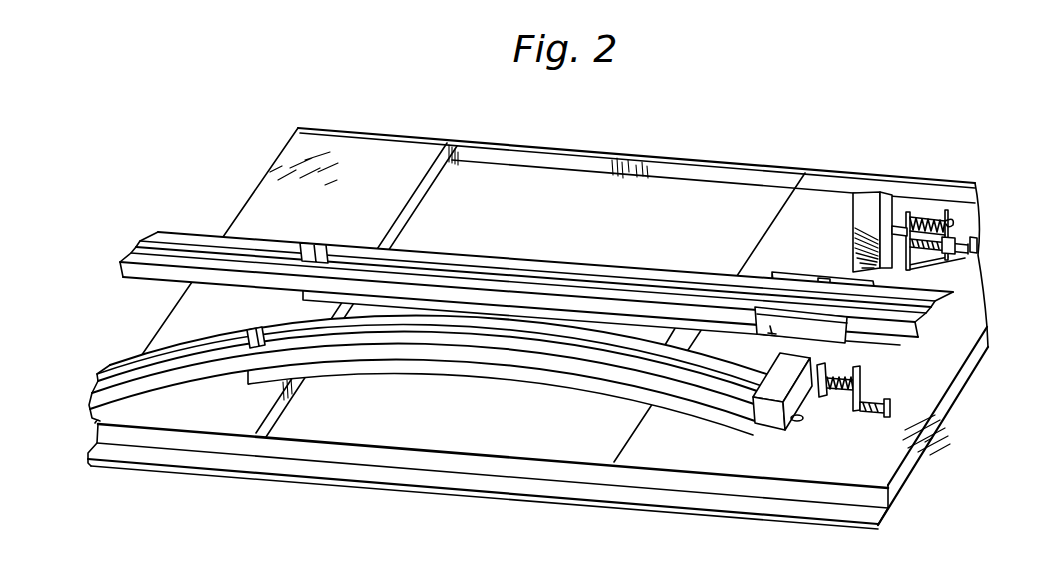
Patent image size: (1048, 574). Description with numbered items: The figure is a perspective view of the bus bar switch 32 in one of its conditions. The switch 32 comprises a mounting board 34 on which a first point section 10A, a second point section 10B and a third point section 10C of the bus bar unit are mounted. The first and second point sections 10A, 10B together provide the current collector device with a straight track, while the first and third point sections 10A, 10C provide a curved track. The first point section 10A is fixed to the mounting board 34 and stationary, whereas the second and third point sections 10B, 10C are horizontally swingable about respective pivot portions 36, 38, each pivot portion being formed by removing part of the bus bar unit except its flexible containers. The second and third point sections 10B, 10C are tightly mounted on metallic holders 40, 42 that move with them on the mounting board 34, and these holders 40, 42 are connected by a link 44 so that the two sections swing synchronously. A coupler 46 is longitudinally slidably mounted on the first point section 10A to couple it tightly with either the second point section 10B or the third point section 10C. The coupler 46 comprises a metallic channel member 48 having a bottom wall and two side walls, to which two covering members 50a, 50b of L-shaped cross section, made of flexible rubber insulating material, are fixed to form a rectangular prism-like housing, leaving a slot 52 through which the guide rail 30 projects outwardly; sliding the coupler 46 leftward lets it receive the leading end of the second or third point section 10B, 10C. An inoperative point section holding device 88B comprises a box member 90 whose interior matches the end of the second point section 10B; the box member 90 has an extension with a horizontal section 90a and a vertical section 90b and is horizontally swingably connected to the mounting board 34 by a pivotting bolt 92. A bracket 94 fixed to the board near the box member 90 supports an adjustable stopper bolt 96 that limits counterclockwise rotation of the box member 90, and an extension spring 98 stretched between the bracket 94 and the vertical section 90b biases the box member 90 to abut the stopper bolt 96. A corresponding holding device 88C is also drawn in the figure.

The first point section 10A is at (918, 345).
The second point section 10B is at (574, 290).
The third point section 10C is at (431, 366).
The guide rail 30 is at (603, 277).
The switch 32 is at (678, 131).
The mounting board 34 is at (401, 143).
The pivot portion 36 is at (328, 240).
The pivot portion 38 is at (258, 324).
The metallic holder 40 is at (330, 297).
The metallic holder 42 is at (500, 381).
The link 44 is at (680, 332).
The coupler 46 is at (801, 262).
The metallic channel member 48 is at (833, 342).
The covering member 50a is at (856, 386).
The covering member 50b is at (822, 283).
The slot 52 is at (770, 328).
The inoperative point section holding device 88B is at (874, 190).
The clamp block 88C is at (798, 432).
The box member 90 is at (918, 216).
The horizontal section 90a is at (950, 264).
The vertical section 90b is at (910, 218).
The pivotting bolt 92 is at (894, 228).
The bracket 94 is at (972, 248).
The adjustable stopper bolt 96 is at (937, 254).
The extension spring 98 is at (931, 216).